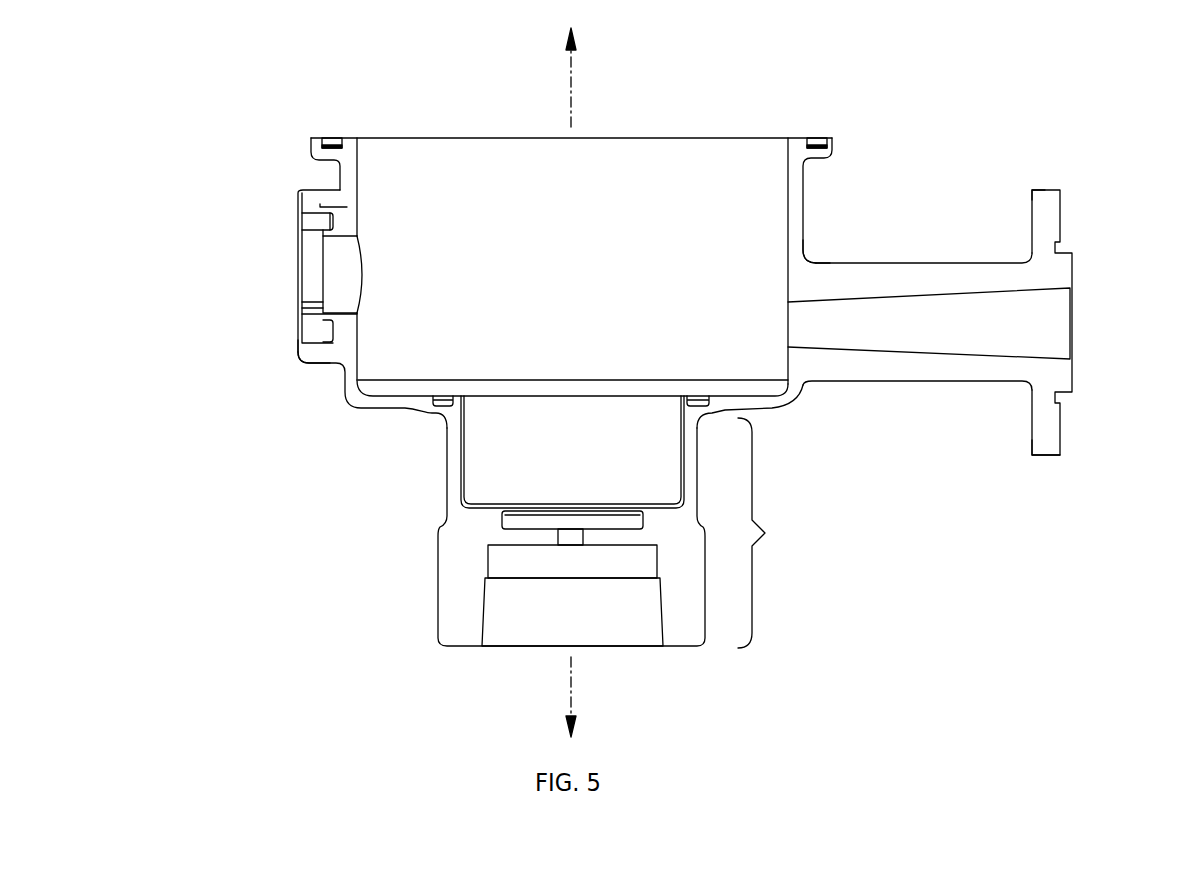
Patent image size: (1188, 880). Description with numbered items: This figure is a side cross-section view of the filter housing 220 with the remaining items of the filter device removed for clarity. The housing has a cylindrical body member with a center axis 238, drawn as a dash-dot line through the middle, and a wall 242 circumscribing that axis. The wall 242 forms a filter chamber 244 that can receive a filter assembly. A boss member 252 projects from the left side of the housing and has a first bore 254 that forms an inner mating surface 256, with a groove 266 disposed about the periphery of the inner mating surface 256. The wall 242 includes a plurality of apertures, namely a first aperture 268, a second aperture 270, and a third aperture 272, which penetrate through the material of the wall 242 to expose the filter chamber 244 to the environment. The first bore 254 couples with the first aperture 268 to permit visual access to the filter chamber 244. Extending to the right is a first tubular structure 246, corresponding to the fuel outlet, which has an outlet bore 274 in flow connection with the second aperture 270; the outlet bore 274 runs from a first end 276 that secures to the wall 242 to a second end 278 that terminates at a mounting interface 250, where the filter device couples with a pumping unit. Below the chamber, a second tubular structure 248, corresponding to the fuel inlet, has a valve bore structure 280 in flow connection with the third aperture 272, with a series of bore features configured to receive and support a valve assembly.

The filter housing 220 is at (797, 400).
The center axis 238 is at (572, 67).
The wall 242 is at (800, 197).
The filter chamber 244 is at (648, 168).
The first tubular structure 246 is at (968, 455).
The second tubular structure 248 is at (392, 562).
The mounting interface 250 is at (1062, 207).
The boss member 252 is at (312, 387).
The first bore 254 is at (289, 289).
The inner mating surface 256 is at (318, 228).
The groove 266 is at (337, 205).
The first aperture 268 is at (373, 268).
The second aperture 270 is at (778, 320).
The third aperture 272 is at (563, 368).
The outlet bore 274 is at (1037, 330).
The first end 276 is at (818, 260).
The second end 278 is at (1035, 182).
The valve bore structure 280 is at (771, 533).